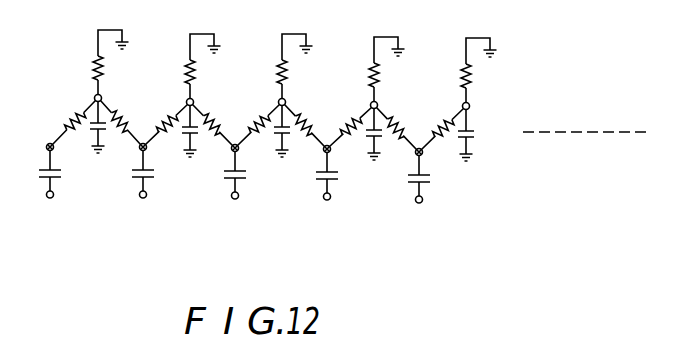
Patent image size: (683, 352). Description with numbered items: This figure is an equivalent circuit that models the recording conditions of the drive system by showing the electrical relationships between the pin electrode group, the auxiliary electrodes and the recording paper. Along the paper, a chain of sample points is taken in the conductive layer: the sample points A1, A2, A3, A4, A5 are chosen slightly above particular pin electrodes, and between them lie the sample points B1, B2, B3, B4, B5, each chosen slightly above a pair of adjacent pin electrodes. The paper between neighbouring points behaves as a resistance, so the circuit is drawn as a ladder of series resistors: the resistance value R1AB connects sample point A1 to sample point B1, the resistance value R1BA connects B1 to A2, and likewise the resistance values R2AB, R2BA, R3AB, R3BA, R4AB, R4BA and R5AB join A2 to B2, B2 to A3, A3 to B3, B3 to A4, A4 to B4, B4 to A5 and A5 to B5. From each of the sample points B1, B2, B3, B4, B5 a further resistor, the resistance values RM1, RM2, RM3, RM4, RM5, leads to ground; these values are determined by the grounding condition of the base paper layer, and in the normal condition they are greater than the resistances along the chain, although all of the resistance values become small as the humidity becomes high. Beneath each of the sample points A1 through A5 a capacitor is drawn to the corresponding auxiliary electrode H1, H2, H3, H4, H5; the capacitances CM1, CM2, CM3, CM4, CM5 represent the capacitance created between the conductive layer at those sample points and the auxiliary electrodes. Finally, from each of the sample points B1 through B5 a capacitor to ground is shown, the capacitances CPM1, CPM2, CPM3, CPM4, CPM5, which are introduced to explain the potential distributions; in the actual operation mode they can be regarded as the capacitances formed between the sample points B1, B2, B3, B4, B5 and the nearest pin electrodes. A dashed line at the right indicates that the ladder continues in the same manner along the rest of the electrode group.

The resistance value RM1 is at (93, 62).
The resistance value RM2 is at (185, 66).
The resistance value RM3 is at (277, 66).
The resistance value RM4 is at (369, 69).
The resistance value RM5 is at (461, 70).
The sample point B1 is at (110, 89).
The sample point B2 is at (202, 93).
The sample point B3 is at (294, 93).
The sample point B4 is at (386, 96).
The sample point B5 is at (478, 97).
The sample point A1 is at (37, 156).
The sample point A2 is at (130, 156).
The sample point A3 is at (222, 157).
The sample point A4 is at (314, 158).
The sample point A5 is at (406, 161).
The auxiliary electrode H1 is at (55, 210).
The auxiliary electrode H2 is at (148, 210).
The auxiliary electrode H3 is at (240, 211).
The auxiliary electrode H4 is at (332, 212).
The auxiliary electrode H5 is at (424, 215).
The resistance value between points A1 and B1 R1AB is at (73, 116).
The resistance value between points A2 and B2 R2AB is at (165, 118).
The resistance value between points A3 and B3 R3AB is at (257, 118).
The resistance value between points A4 and B4 R4AB is at (349, 120).
The resistance value between points A5 and B5 R5AB is at (441, 122).
The resistance value between points B1 and A2 R1BA is at (127, 116).
The resistance value between points B2 and A3 R2BA is at (219, 119).
The resistance value between points B3 and A4 R3BA is at (311, 119).
The resistance value between points B4 and A5 R4BA is at (403, 122).
The capacitance CM1 is at (68, 172).
The capacitance CM2 is at (161, 172).
The capacitance CM3 is at (253, 173).
The capacitance CM4 is at (345, 174).
The capacitance CM5 is at (437, 177).
The capacitance CPM1 is at (79, 129).
The capacitance CPM2 is at (171, 133).
The capacitance CPM3 is at (263, 133).
The capacitance CPM4 is at (355, 136).
The capacitance CPM5 is at (492, 137).